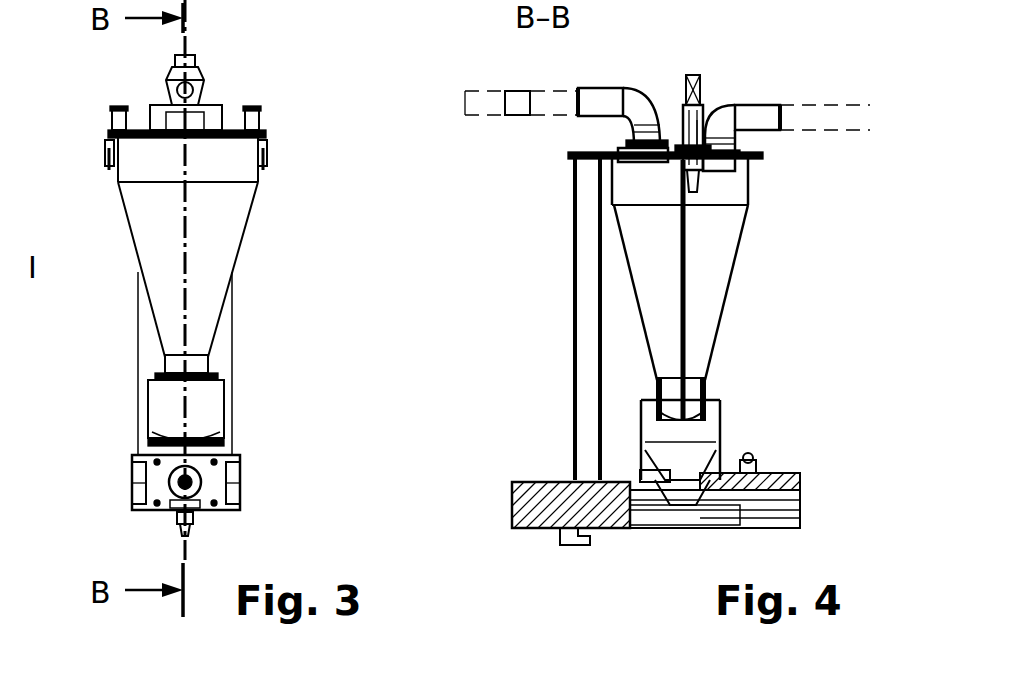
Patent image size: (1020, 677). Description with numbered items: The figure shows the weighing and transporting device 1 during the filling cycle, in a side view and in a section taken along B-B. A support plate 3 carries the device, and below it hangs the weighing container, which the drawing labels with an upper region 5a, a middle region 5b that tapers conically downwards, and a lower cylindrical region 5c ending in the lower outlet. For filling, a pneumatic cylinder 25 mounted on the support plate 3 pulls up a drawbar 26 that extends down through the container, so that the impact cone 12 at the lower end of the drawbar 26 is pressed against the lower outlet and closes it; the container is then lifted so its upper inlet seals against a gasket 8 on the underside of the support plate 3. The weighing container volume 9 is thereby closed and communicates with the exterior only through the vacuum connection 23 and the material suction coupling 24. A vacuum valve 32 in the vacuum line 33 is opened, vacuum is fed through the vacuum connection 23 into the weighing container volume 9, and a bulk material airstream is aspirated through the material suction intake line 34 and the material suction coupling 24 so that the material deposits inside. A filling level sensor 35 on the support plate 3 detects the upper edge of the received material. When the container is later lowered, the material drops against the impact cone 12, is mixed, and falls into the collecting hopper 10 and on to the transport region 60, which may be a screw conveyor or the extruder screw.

In FIG. 3, the weighing and transporting device 1 is at (268, 134).
In FIG. 4, the weighing and transporting device 1 is at (772, 165).
In FIG. 3, the support plate 3 is at (232, 130).
In FIG. 3, the cylindrical housing portion 5a is at (258, 173).
In FIG. 3, the middle region 5b is at (238, 244).
In FIG. 3, the lower cylindrical region 5c is at (210, 367).
In FIG. 4, the gasket 8 is at (750, 168).
In FIG. 3, the weighing container volume 9 is at (212, 263).
In FIG. 4, the collecting hopper 10 is at (712, 468).
In FIG. 4, the impact cone 12 is at (706, 402).
In FIG. 4, the vacuum connection 23 is at (600, 92).
In FIG. 4, the material suction coupling 24 is at (755, 105).
In FIG. 4, the pneumatic cylinder 25 is at (697, 120).
In FIG. 4, the drawbar 26 is at (688, 310).
In FIG. 4, the vacuum valve 32 is at (515, 118).
In FIG. 4, the vacuum line 33 is at (480, 90).
In FIG. 4, the material suction intake line 34 is at (805, 107).
In FIG. 4, the filling level sensor 35 is at (697, 160).
In FIG. 4, the transport region 60 is at (800, 478).